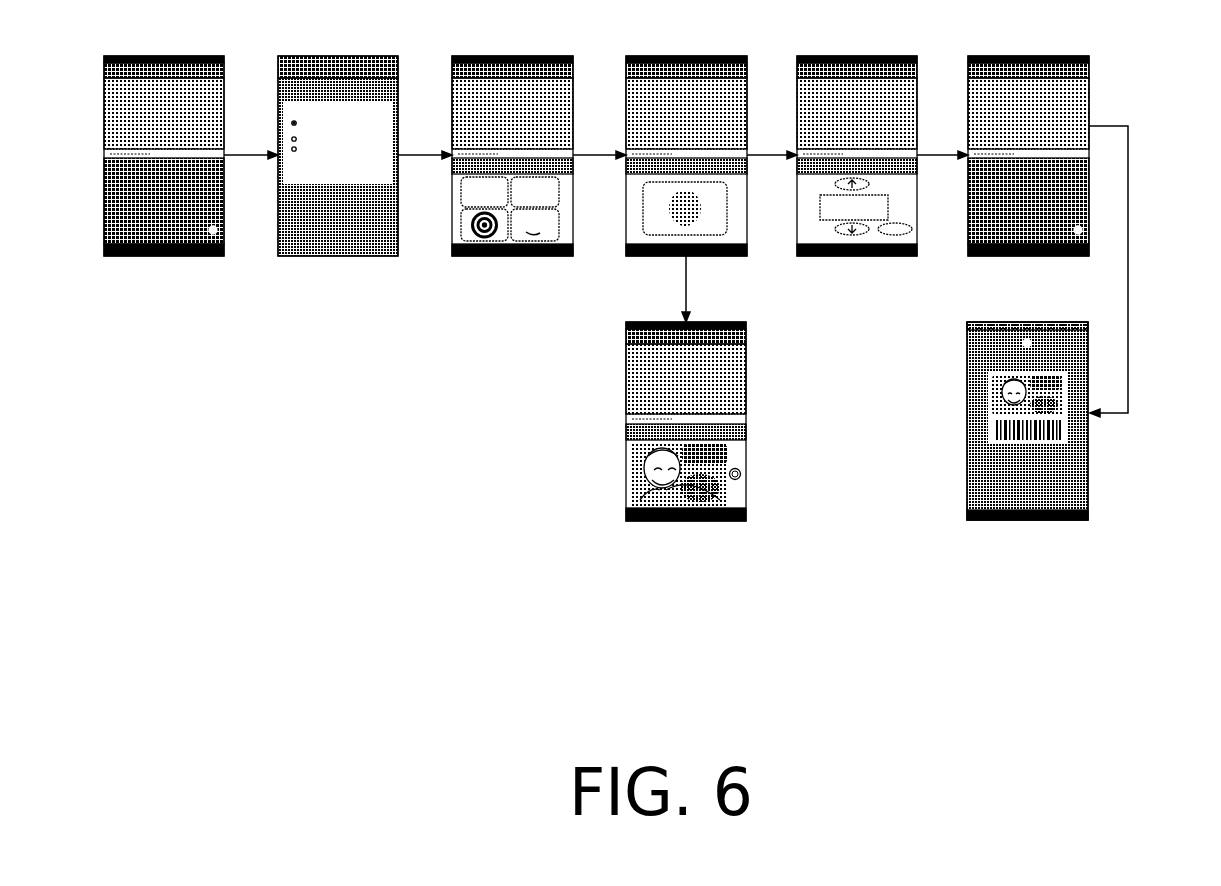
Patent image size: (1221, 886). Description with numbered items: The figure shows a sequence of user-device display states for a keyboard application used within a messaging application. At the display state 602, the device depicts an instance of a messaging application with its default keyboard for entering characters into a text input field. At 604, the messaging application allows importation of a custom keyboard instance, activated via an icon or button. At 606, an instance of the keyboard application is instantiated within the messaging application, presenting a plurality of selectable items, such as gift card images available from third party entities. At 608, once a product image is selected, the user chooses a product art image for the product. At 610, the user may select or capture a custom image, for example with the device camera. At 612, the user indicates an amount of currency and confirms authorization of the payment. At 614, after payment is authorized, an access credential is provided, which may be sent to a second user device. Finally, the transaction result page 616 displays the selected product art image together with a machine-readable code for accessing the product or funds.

The display of user device depicting messaging application 602 is at (226, 64).
The custom keyboard importation step 604 is at (399, 65).
The keyboard application instantiation step 606 is at (574, 65).
The product art image selection step 608 is at (748, 65).
The custom image selection step 610 is at (748, 330).
The currency amount indication step 612 is at (918, 65).
The access credential provision step 614 is at (1090, 65).
The transaction result page 616 is at (967, 334).